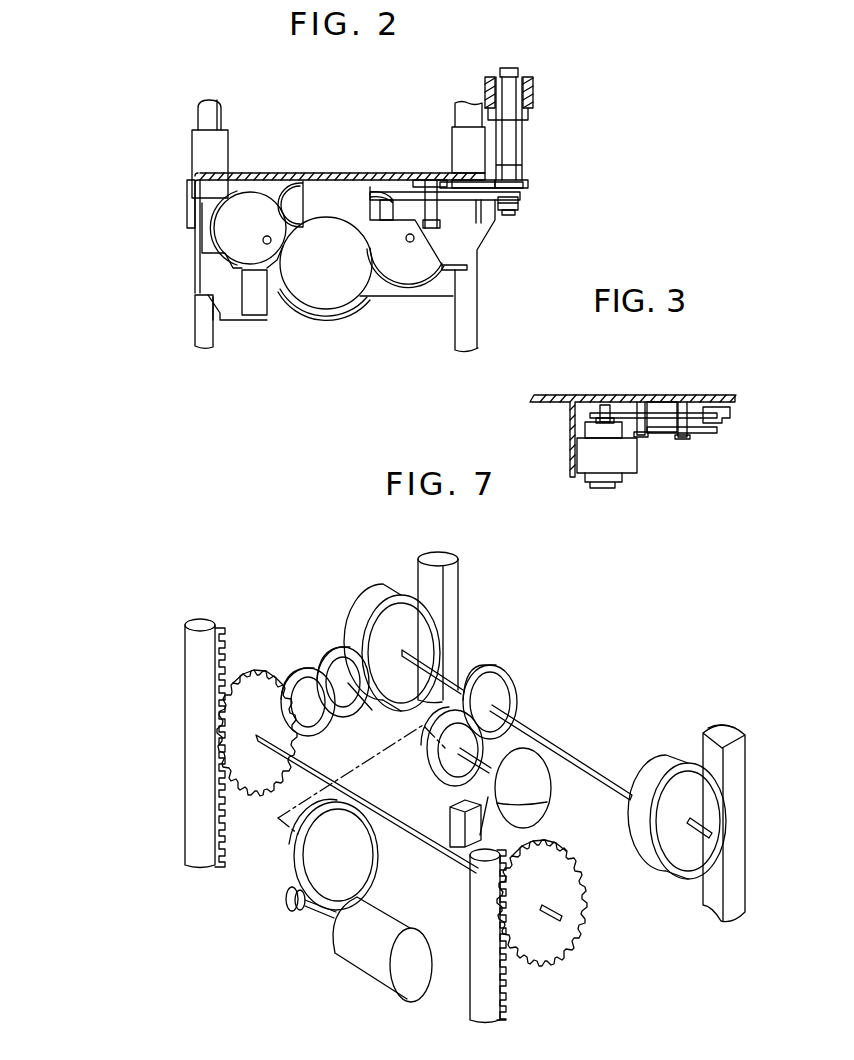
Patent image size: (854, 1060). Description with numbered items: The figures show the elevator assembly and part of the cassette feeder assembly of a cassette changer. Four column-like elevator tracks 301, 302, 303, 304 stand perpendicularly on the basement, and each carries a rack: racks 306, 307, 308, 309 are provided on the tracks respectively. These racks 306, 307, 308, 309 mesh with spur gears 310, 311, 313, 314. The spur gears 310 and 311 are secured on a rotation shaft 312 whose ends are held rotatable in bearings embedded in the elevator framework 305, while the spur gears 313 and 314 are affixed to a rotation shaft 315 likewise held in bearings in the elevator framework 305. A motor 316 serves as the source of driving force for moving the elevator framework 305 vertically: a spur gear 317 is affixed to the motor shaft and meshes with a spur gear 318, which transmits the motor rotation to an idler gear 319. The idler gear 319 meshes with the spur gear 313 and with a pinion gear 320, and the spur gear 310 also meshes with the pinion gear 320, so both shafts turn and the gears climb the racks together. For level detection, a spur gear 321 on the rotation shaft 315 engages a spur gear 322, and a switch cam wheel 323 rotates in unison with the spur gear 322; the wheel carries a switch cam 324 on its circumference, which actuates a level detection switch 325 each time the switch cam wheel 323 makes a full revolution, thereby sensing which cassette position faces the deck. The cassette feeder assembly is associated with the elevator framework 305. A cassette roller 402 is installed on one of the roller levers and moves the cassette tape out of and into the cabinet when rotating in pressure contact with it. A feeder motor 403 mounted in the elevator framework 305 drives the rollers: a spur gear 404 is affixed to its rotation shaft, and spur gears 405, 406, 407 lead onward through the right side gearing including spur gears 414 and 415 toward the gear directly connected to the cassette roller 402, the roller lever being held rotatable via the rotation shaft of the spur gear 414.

In FIG. 7, the elevator track 301 is at (190, 660).
In FIG. 2, the elevator track 302 is at (212, 323).
In FIG. 7, the elevator track 302 is at (465, 1003).
In FIG. 7, the elevator track 303 is at (453, 594).
In FIG. 2, the elevator track 304 is at (472, 323).
In FIG. 7, the elevator track 304 is at (738, 753).
In FIG. 2, the elevator framework 305 is at (335, 173).
In FIG. 3, the elevator framework 305 is at (576, 395).
In FIG. 7, the rack 306 is at (220, 626).
In FIG. 7, the rack 307 is at (504, 994).
In FIG. 7, the rack 308 is at (423, 580).
In FIG. 7, the rack 309 is at (716, 744).
In FIG. 7, the spur gear 310 is at (263, 690).
In FIG. 2, the spur gear 311 is at (250, 215).
In FIG. 7, the spur gear 311 is at (570, 928).
In FIG. 7, the rotation shaft 312 is at (393, 798).
In FIG. 7, the spur gear 313 is at (372, 595).
In FIG. 2, the spur gear 314 is at (418, 288).
In FIG. 7, the spur gear 314 is at (665, 758).
In FIG. 7, the rotation shaft 315 is at (563, 740).
In FIG. 7, the motor 316 is at (360, 962).
In FIG. 7, the spur gear 317 is at (300, 918).
In FIG. 7, the spur gear 318 is at (363, 877).
In FIG. 7, the idler gear 319 is at (327, 650).
In FIG. 7, the pinion gear 320 is at (297, 672).
In FIG. 7, the spur gear 321 is at (517, 677).
In FIG. 7, the spur gear 322 is at (435, 767).
In FIG. 2, the switch cam wheel 323 is at (346, 287).
In FIG. 7, the switch cam wheel 323 is at (535, 781).
In FIG. 7, the switch cam 324 is at (497, 803).
In FIG. 2, the level detection switch 325 is at (257, 318).
In FIG. 7, the level detection switch 325 is at (473, 833).
In FIG. 2, the cassette roller 402 is at (535, 98).
In FIG. 3, the feeder motor 403 is at (632, 463).
In FIG. 3, the spur gear 404 is at (612, 403).
In FIG. 3, the spur gear 405 is at (660, 412).
In FIG. 3, the spur gear 406 is at (700, 433).
In FIG. 3, the spur gear 407 is at (721, 405).
In FIG. 2, the spur gear 414 is at (420, 180).
In FIG. 2, the spur gear 415 is at (462, 172).